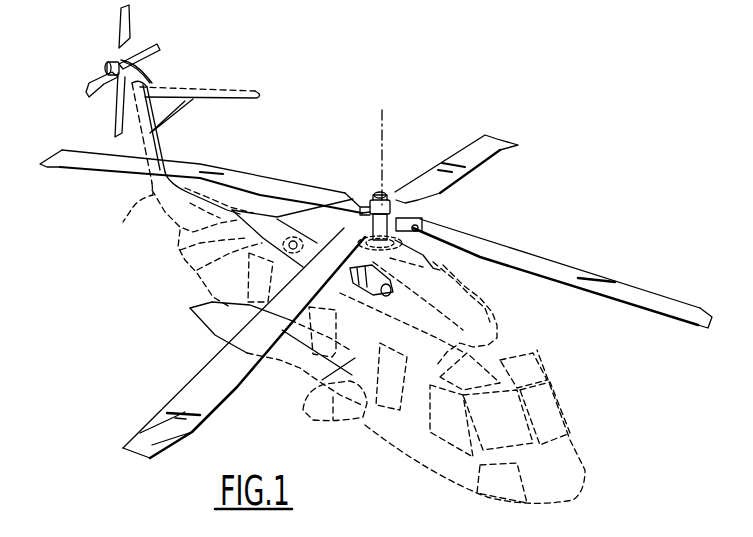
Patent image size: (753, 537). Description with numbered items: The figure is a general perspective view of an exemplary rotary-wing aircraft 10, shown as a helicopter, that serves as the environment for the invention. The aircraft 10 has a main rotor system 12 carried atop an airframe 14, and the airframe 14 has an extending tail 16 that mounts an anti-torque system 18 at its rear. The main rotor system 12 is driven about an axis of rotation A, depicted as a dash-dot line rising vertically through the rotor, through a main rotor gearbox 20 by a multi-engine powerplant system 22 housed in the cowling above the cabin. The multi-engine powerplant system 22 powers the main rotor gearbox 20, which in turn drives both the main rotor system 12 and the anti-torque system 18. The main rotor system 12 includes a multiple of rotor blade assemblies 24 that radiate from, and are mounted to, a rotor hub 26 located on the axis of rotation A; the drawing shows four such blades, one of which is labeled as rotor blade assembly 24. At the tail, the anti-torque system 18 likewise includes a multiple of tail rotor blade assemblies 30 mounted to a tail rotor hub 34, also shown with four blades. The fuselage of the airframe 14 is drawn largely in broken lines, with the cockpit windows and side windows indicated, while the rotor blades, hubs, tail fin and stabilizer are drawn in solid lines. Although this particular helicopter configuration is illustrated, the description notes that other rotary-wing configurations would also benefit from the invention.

The rotary-wing aircraft 10 is at (455, 203).
The main rotor system 12 is at (376, 287).
The airframe 14 is at (303, 410).
The extending tail 16 is at (123, 222).
The anti-torque system 18 is at (96, 73).
The main rotor gearbox 20 is at (490, 306).
The multi-engine powerplant system 22 is at (193, 273).
The rotor blade assembly 24 is at (545, 257).
The rotor hub 26 is at (408, 220).
The tail rotor blade assembly 30 is at (92, 88).
The tail rotor hub 34 is at (108, 68).
The axis of rotation A is at (383, 154).